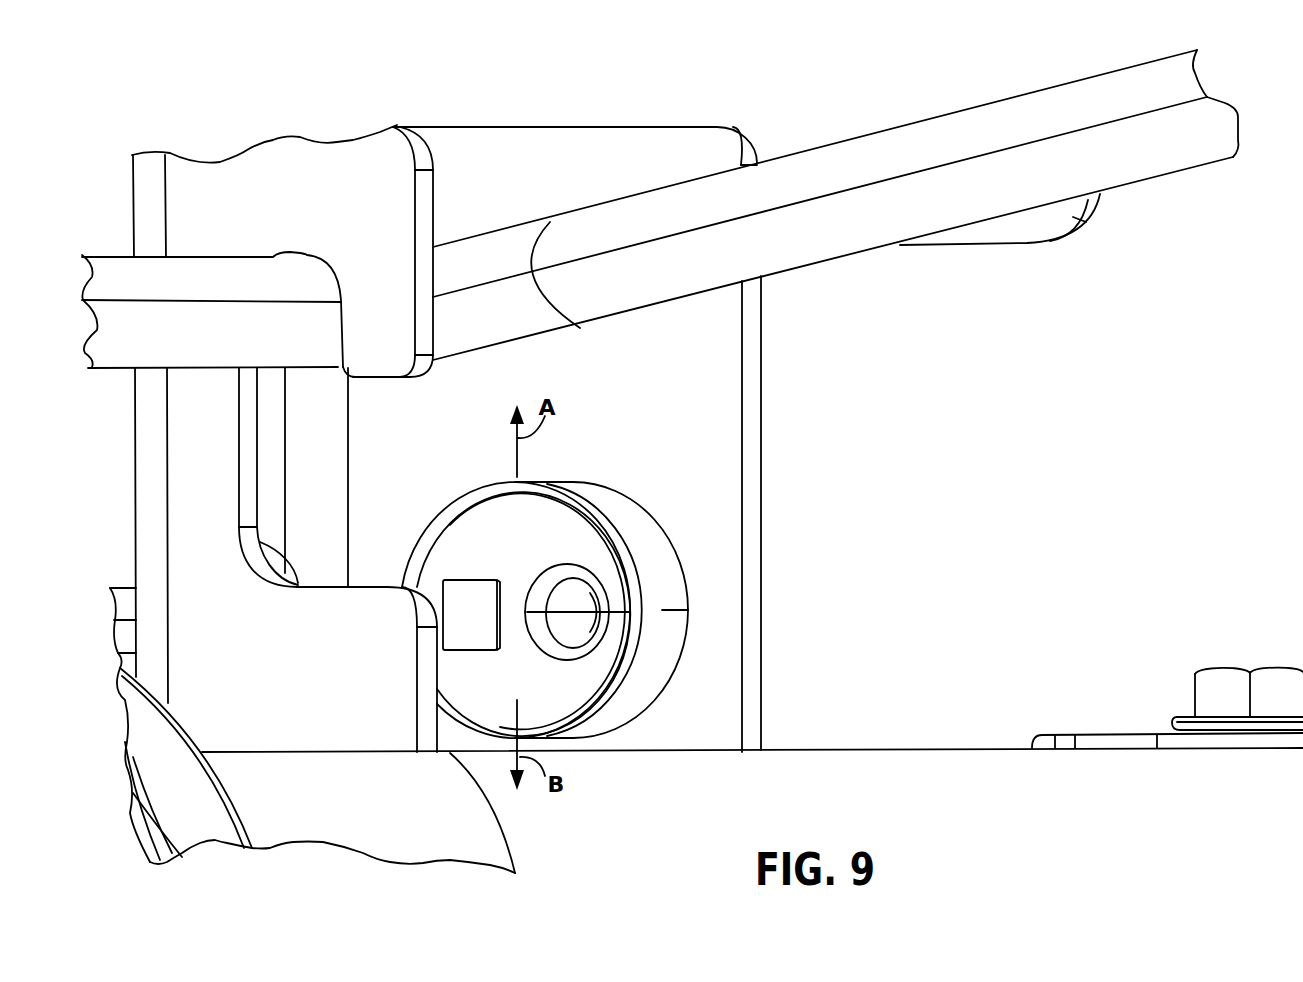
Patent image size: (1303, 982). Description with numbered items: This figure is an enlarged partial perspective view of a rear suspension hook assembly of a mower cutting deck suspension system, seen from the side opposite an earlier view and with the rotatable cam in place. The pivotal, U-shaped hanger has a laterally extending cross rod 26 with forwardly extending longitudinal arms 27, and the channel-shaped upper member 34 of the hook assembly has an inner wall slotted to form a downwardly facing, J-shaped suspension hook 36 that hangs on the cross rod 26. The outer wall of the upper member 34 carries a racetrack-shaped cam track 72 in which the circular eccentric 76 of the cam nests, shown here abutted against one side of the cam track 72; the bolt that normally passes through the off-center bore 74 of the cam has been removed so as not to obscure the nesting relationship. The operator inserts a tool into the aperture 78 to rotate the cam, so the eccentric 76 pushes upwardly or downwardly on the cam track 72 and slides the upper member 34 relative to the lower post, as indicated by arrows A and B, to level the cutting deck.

The cross rod 26 is at (182, 335).
The longitudinal arm 27 is at (888, 160).
The upper member 34 is at (597, 145).
The suspension hook 36 is at (370, 323).
The cam track 72 is at (457, 503).
The bore 74 is at (577, 597).
The eccentric 76 is at (537, 520).
The aperture 78 is at (472, 603).